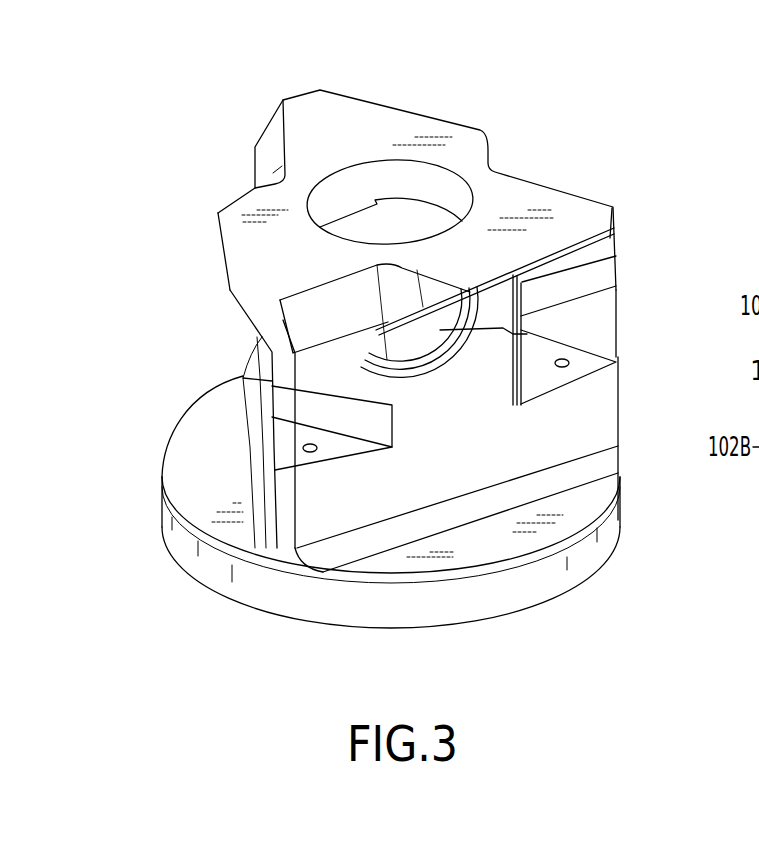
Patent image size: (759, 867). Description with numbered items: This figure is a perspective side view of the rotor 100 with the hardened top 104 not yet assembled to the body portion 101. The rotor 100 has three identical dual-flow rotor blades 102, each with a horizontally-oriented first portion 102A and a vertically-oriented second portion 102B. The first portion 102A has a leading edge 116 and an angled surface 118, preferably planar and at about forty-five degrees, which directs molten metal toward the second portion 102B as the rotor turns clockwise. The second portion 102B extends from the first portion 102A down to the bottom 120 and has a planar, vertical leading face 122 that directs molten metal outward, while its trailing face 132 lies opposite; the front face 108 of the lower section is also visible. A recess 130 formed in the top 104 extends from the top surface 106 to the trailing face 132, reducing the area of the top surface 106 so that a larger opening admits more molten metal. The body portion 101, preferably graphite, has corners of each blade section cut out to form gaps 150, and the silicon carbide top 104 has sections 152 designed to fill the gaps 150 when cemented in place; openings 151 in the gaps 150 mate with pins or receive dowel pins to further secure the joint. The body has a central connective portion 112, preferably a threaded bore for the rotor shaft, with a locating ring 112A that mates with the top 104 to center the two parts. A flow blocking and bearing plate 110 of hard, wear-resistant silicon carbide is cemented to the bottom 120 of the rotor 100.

The rotor 100 is at (633, 137).
The body portion 101 is at (290, 540).
The rotor blade 102 is at (429, 114).
The first portion 102A is at (226, 295).
The second portion 102B is at (243, 378).
The hardened top 104 is at (331, 126).
The top surface 106 is at (372, 128).
The front face of lower section 108 is at (447, 463).
The flow blocking and bearing plate 110 is at (316, 588).
The connective portion 112 is at (612, 362).
The locating ring 112A is at (462, 338).
The leading edge 116 is at (222, 218).
The angled surface 118 is at (548, 260).
The bottom 120 is at (583, 505).
The leading face 122 is at (577, 447).
The recess 130 is at (270, 153).
The trailing face 132 is at (313, 308).
The gap 150 is at (618, 365).
The opening 151 is at (307, 450).
The section 152 is at (597, 279).